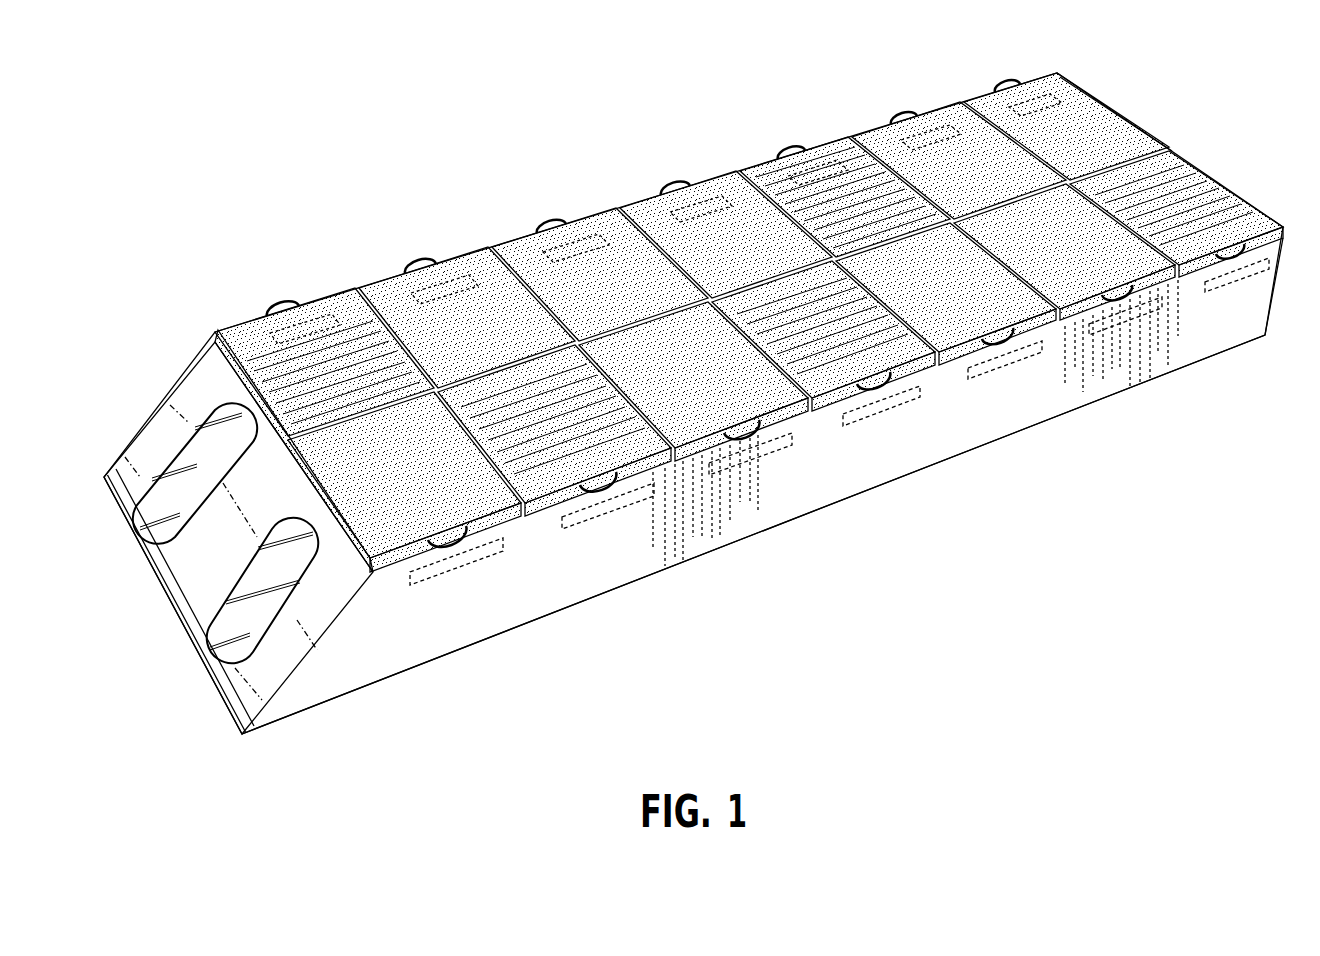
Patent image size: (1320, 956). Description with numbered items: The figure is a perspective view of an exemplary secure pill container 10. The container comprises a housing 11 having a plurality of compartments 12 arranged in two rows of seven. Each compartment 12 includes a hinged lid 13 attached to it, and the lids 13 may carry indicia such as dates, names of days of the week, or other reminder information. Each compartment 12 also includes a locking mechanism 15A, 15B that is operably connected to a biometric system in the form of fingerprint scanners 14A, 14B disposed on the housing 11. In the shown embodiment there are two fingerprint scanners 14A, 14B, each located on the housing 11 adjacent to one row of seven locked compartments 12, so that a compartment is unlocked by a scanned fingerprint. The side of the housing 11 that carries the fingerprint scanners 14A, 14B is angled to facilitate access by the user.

The secure pill container 10 is at (308, 149).
The housing 11 is at (1027, 412).
The compartment 12 is at (1190, 160).
The hinged lid 13 is at (1250, 223).
The fingerprint scanner 14A is at (221, 630).
The fingerprint scanner 14B is at (191, 450).
The locking mechanism 15A is at (437, 584).
The locking mechanism 15B is at (277, 343).